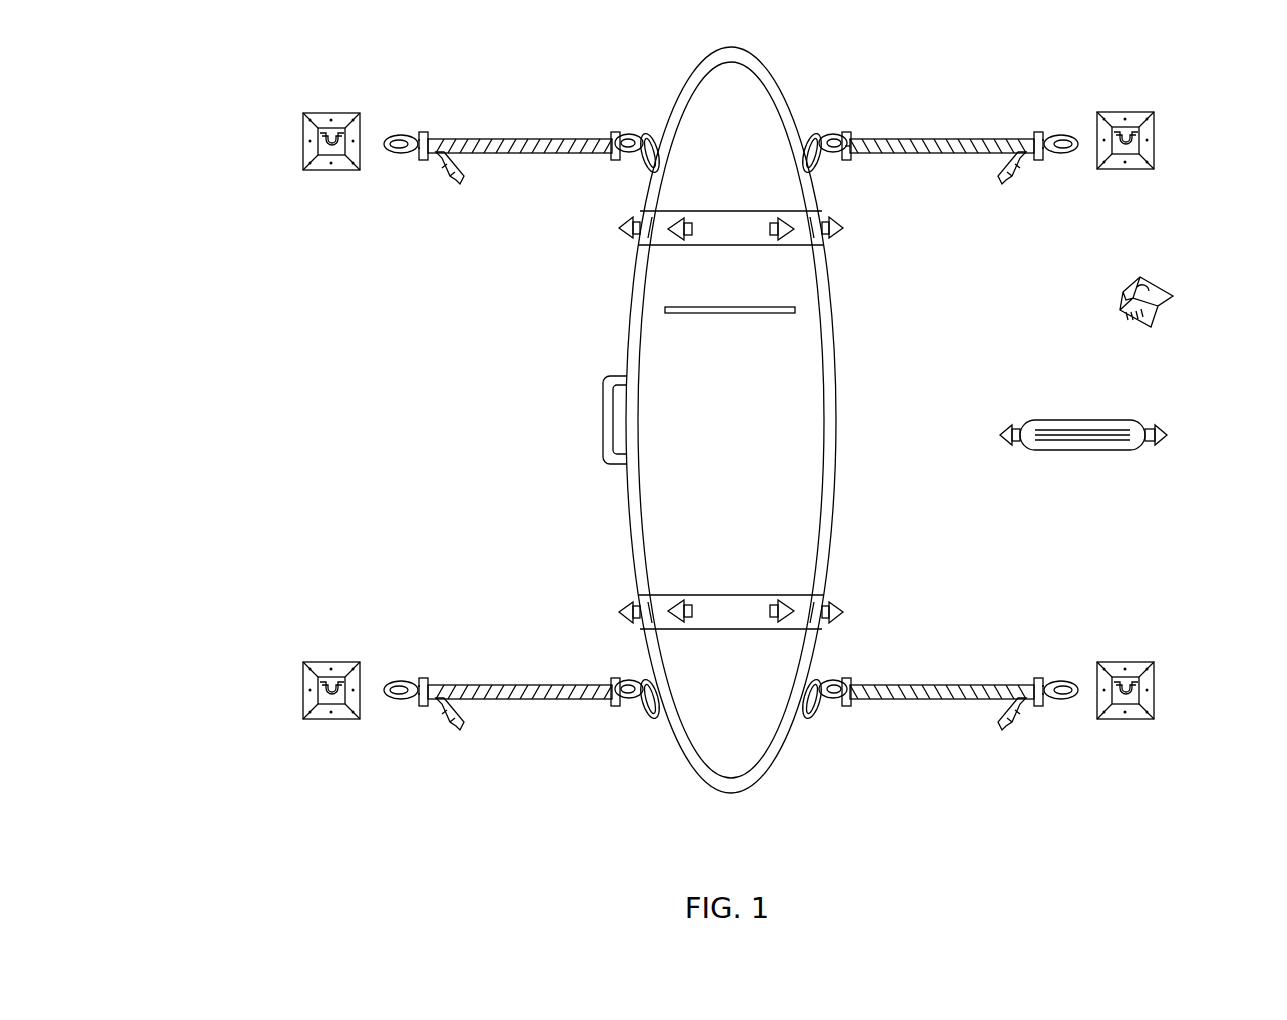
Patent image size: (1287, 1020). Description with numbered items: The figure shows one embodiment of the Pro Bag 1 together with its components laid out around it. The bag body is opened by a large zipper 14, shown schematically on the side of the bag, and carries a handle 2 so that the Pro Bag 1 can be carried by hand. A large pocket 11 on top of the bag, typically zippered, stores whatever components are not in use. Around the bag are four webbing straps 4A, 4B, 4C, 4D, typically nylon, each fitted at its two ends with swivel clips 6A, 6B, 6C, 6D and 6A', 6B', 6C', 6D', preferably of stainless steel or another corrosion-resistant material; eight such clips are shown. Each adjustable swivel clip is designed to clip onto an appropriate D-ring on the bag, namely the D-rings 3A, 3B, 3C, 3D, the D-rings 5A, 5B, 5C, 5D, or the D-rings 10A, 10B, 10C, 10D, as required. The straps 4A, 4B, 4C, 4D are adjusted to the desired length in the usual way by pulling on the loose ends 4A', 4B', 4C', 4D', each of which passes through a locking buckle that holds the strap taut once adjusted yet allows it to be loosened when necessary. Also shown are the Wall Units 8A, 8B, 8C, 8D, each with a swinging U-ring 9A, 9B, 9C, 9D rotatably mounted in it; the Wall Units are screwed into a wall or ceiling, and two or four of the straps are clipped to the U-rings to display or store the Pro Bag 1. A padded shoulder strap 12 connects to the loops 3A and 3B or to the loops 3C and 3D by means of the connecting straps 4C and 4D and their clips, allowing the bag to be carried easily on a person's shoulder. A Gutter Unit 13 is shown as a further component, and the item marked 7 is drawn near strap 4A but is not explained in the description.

The Pro Bag 1 is at (596, 487).
The handle 2 is at (602, 420).
The D-ring 3A is at (842, 228).
The D-ring 3B is at (842, 612).
The D-ring 3C is at (620, 612).
The D-ring 3D is at (620, 228).
The strap 4A is at (942, 110).
The strap 4B is at (942, 726).
The strap 4C is at (519, 726).
The strap 4D is at (519, 110).
The loose end 4A' is at (1005, 204).
The loose end 4B' is at (1008, 752).
The loose end 4C' is at (459, 752).
The loose end 4D' is at (455, 204).
The D-ring 5A is at (821, 163).
The D-ring 5B is at (815, 712).
The D-ring 5C is at (644, 712).
The D-ring 5D is at (641, 163).
The swivel clip 6A is at (1057, 181).
The swivel clip 6B is at (1055, 727).
The swivel clip 6C is at (400, 727).
The swivel clip 6D is at (400, 181).
The swivel clip 6A' is at (826, 106).
The swivel clip 6B' is at (868, 670).
The swivel clip 6C' is at (592, 670).
The swivel clip 6D' is at (638, 106).
The strap assembly 7 is at (1016, 114).
The Wall Unit 8A is at (1158, 139).
The Wall Unit 8B is at (1158, 690).
The Wall Unit 8C is at (303, 690).
The Wall Unit 8D is at (331, 172).
The U-ring 9A is at (1130, 140).
The U-ring 9B is at (1130, 690).
The U-ring 9C is at (331, 690).
The U-ring 9D is at (332, 141).
The D-ring 10A is at (797, 243).
The D-ring 10B is at (797, 597).
The D-ring 10C is at (665, 597).
The D-ring 10D is at (665, 243).
The pocket 11 is at (782, 313).
The padded shoulder strap 12 is at (1095, 470).
The Gutter Unit 13 is at (1190, 309).
The zipper 14 is at (862, 465).